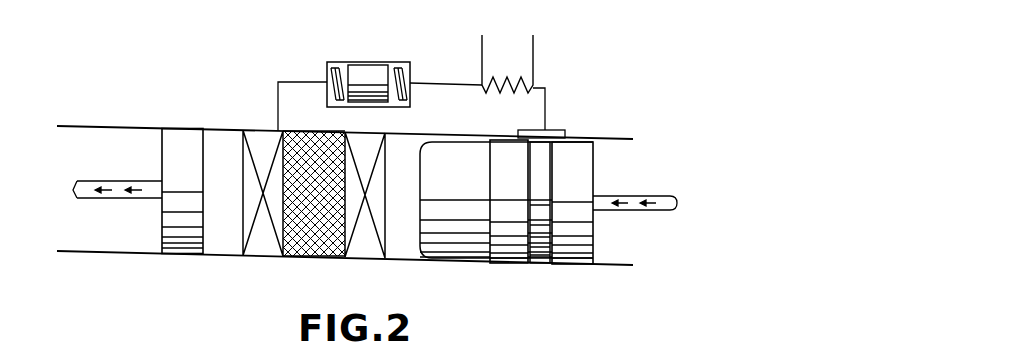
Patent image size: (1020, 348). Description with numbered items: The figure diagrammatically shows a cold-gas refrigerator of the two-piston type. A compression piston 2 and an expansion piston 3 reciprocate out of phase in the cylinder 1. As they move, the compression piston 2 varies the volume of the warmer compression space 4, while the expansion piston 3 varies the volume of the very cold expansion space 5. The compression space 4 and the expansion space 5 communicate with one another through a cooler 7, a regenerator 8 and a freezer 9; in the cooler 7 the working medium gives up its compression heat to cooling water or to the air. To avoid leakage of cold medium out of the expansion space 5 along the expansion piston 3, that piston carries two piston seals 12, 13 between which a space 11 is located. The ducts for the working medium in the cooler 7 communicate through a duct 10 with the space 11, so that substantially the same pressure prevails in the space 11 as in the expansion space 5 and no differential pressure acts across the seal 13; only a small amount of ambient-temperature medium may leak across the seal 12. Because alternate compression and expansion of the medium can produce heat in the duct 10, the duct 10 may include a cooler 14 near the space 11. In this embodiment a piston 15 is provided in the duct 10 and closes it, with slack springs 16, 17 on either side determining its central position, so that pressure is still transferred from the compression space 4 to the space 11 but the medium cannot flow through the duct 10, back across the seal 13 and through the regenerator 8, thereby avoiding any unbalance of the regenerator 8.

The cylinder 1 is at (116, 126).
The compression piston 2 is at (181, 142).
The expansion piston 3 is at (507, 233).
The compression space 4 is at (228, 202).
The expansion space 5 is at (410, 206).
The cooler 7 is at (261, 238).
The regenerator 8 is at (317, 240).
The freezer 9 is at (363, 240).
The duct 10 is at (444, 83).
The space 11 is at (545, 133).
The piston seal 12 is at (586, 141).
The piston seal 13 is at (510, 139).
The cooler 14 is at (500, 80).
The piston 15 is at (367, 74).
The slack spring 16 is at (400, 66).
The slack spring 17 is at (340, 66).